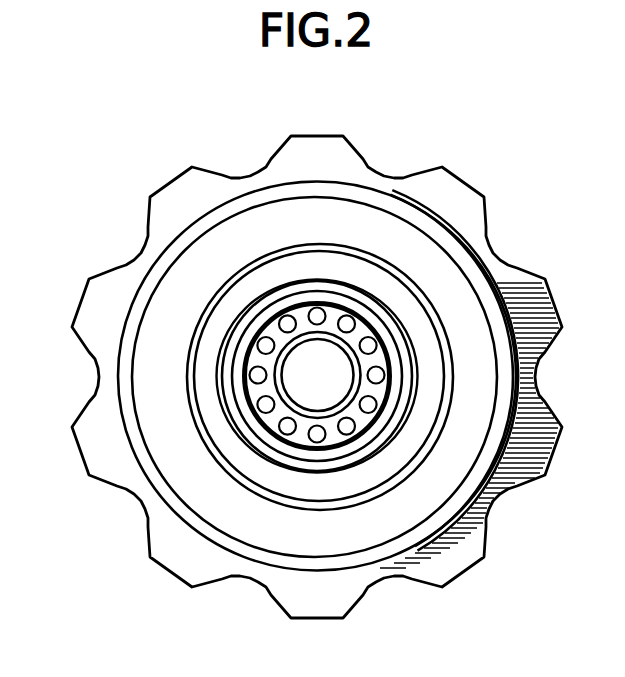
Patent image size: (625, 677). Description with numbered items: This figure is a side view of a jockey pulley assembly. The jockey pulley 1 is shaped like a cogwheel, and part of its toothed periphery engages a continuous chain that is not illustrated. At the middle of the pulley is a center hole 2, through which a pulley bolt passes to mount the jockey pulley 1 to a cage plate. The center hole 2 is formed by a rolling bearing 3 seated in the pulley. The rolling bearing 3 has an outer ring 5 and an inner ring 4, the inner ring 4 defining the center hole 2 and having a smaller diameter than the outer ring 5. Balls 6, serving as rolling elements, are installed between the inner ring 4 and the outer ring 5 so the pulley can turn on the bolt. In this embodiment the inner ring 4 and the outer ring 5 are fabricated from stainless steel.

The jockey pulley 1 is at (340, 148).
The center hole 2 is at (343, 386).
The rolling bearing 3 is at (55, 518).
The inner ring 4 is at (290, 414).
The outer ring 5 is at (230, 413).
The balls 6 is at (303, 306).